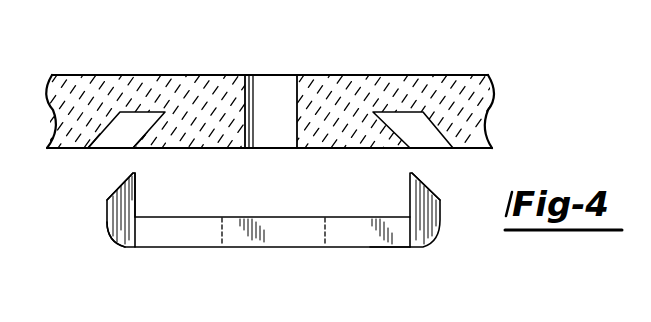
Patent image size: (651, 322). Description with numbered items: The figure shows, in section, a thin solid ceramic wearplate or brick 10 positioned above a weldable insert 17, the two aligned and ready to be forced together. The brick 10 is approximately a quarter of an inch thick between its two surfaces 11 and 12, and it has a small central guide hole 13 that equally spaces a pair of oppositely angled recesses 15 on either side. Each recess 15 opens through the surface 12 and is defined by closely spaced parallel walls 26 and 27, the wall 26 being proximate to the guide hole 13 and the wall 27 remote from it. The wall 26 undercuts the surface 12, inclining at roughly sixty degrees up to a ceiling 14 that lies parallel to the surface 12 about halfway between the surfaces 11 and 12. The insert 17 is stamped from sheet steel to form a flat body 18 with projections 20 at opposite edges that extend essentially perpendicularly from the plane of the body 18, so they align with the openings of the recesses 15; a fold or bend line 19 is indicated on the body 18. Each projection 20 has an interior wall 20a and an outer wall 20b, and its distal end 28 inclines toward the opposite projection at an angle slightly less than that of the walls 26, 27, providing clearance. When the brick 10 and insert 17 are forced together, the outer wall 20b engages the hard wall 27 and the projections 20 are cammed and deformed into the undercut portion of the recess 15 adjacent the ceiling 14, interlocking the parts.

The brick 10 is at (422, 64).
The surface 11 is at (94, 75).
The surface 12 is at (330, 149).
The central guide hole 13 is at (296, 92).
The ceiling 14 is at (149, 117).
The recess 15 is at (432, 150).
The weldable insert 17 is at (385, 251).
The flat body 18 is at (176, 249).
The fold / hinge line 19 is at (323, 242).
The projection 20 is at (443, 227).
The interior wall 20a is at (137, 197).
The outer wall 20b is at (106, 222).
The wall 26 is at (133, 148).
The wall 27 is at (88, 149).
The distal end 28 is at (118, 188).